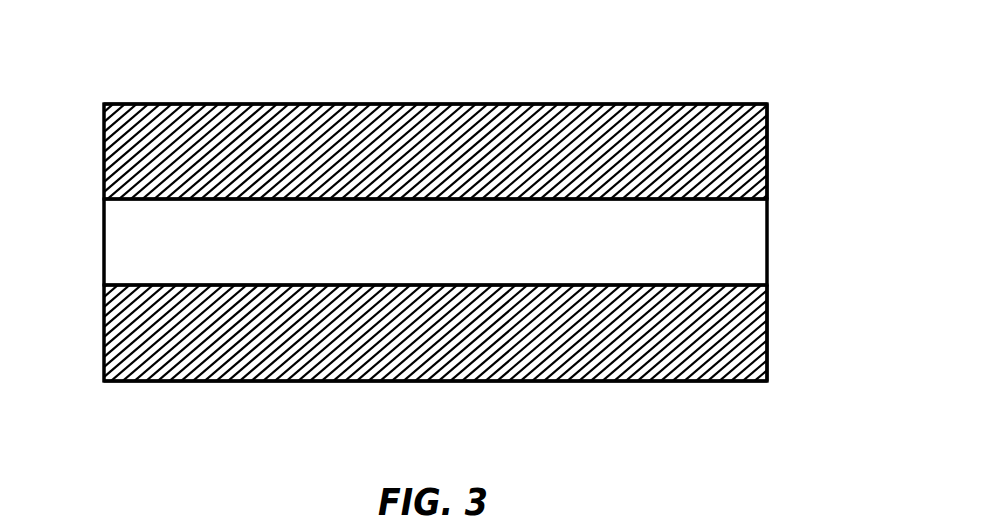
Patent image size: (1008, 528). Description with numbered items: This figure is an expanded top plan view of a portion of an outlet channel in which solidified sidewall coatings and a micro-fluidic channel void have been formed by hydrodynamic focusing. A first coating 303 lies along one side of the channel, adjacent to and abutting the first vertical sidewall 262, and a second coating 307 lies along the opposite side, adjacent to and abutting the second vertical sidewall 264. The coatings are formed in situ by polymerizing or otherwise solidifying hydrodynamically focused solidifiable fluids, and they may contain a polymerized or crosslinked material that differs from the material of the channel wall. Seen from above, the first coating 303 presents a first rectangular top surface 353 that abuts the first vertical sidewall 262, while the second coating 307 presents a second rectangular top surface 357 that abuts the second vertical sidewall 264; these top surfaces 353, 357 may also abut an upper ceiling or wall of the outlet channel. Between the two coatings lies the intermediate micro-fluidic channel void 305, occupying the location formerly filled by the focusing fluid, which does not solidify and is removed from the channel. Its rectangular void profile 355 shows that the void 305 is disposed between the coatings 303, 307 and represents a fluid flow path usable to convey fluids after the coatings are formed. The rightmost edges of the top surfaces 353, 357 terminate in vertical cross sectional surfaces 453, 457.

The first coating 303 is at (190, 100).
The first vertical sidewall 262 is at (432, 103).
The first rectangular top surface 353 is at (598, 140).
The vertical cross sectional surface 453 is at (788, 152).
The intermediate micro-fluidic channel void 305 is at (152, 217).
The second coating 307 is at (205, 265).
The rectangular void profile 355 is at (460, 253).
The vertical cross sectional surface 457 is at (788, 332).
The second vertical sidewall 264 is at (440, 382).
The second rectangular top surface 357 is at (597, 337).